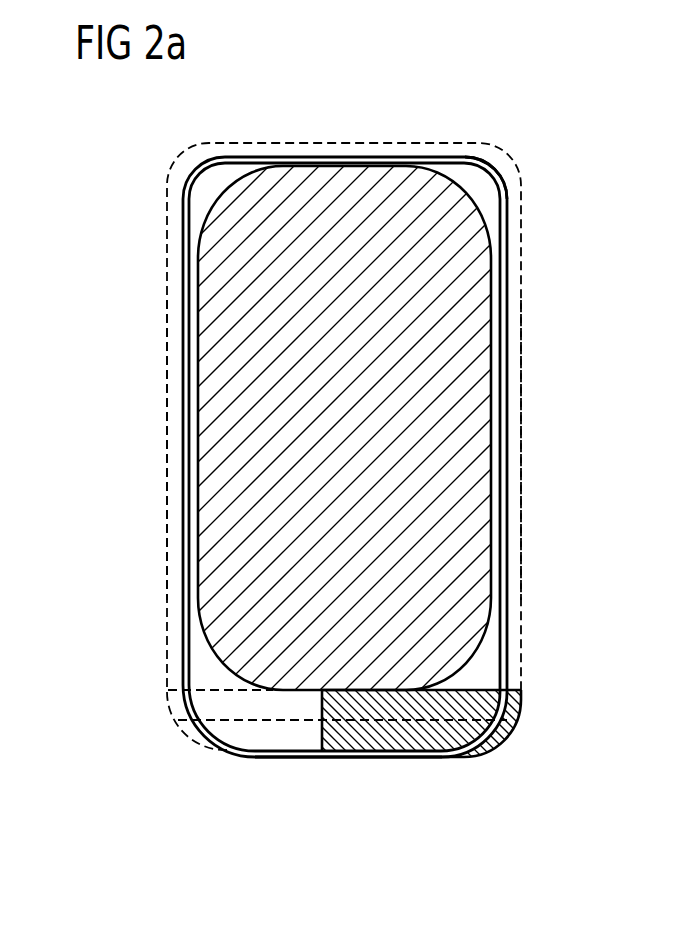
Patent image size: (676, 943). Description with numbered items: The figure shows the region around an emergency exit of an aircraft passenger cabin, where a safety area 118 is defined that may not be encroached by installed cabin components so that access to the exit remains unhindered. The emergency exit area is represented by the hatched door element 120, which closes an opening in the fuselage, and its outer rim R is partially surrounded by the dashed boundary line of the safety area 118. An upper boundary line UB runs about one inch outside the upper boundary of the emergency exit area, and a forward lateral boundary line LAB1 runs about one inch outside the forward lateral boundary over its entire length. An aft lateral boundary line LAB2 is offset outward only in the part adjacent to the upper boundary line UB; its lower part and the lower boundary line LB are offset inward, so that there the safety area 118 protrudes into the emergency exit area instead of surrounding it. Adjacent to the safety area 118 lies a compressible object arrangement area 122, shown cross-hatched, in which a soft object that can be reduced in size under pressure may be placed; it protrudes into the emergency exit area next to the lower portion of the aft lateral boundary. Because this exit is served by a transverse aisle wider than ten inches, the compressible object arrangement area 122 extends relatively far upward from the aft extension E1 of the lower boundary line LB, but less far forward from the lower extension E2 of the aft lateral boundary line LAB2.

The safety area 118 is at (515, 297).
The door element 120 is at (297, 197).
The compressible object arrangement area 122 is at (370, 730).
The upper boundary line UB is at (393, 143).
The lower boundary line LB is at (230, 752).
The fwd lateral boundary line LAB1 is at (167, 446).
The aft lateral boundary line LAB2 is at (522, 453).
The outer rim R is at (488, 172).
The aft extension E1 is at (400, 758).
The lower extension E2 is at (521, 705).